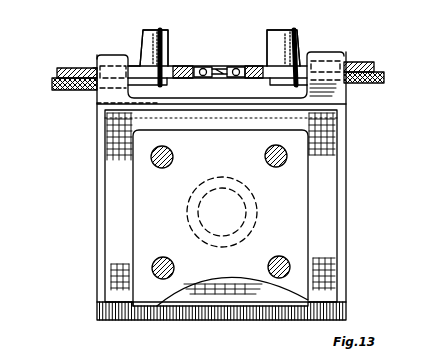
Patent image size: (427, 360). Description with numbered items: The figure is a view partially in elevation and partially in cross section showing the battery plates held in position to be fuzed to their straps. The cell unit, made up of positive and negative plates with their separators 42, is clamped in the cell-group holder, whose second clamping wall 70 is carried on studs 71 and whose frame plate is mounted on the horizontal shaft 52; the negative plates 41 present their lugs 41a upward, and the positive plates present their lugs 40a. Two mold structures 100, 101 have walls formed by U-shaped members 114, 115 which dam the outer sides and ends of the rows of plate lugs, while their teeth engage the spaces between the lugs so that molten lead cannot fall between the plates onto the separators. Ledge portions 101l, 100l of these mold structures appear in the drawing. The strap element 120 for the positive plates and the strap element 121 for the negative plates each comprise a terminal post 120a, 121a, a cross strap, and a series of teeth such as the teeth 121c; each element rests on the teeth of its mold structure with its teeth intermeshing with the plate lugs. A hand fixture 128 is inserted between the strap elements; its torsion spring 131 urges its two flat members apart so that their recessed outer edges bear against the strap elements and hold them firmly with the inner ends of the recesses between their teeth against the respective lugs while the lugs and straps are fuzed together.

The U-shaped member 115 is at (56, 72).
The strap element 121 is at (134, 52).
The teeth 121c is at (95, 66).
The lugs 41a is at (107, 66).
The terminal post 121a is at (148, 36).
The hand fixture 128 is at (198, 62).
The torsion spring 131 is at (217, 76).
The terminal post 120a is at (276, 38).
The strap element 120 is at (306, 50).
The lugs 40a is at (333, 58).
The U-shaped member 114 is at (363, 62).
The mold structure 100 is at (364, 84).
The mold structure 101 is at (66, 92).
The ledge 101l is at (157, 85).
The ledge 100l is at (272, 84).
The negative plates 41 is at (110, 209).
The side wall 70 is at (297, 210).
The studs 71 is at (264, 152).
The shaft 52 is at (187, 213).
The separators 42 is at (194, 314).